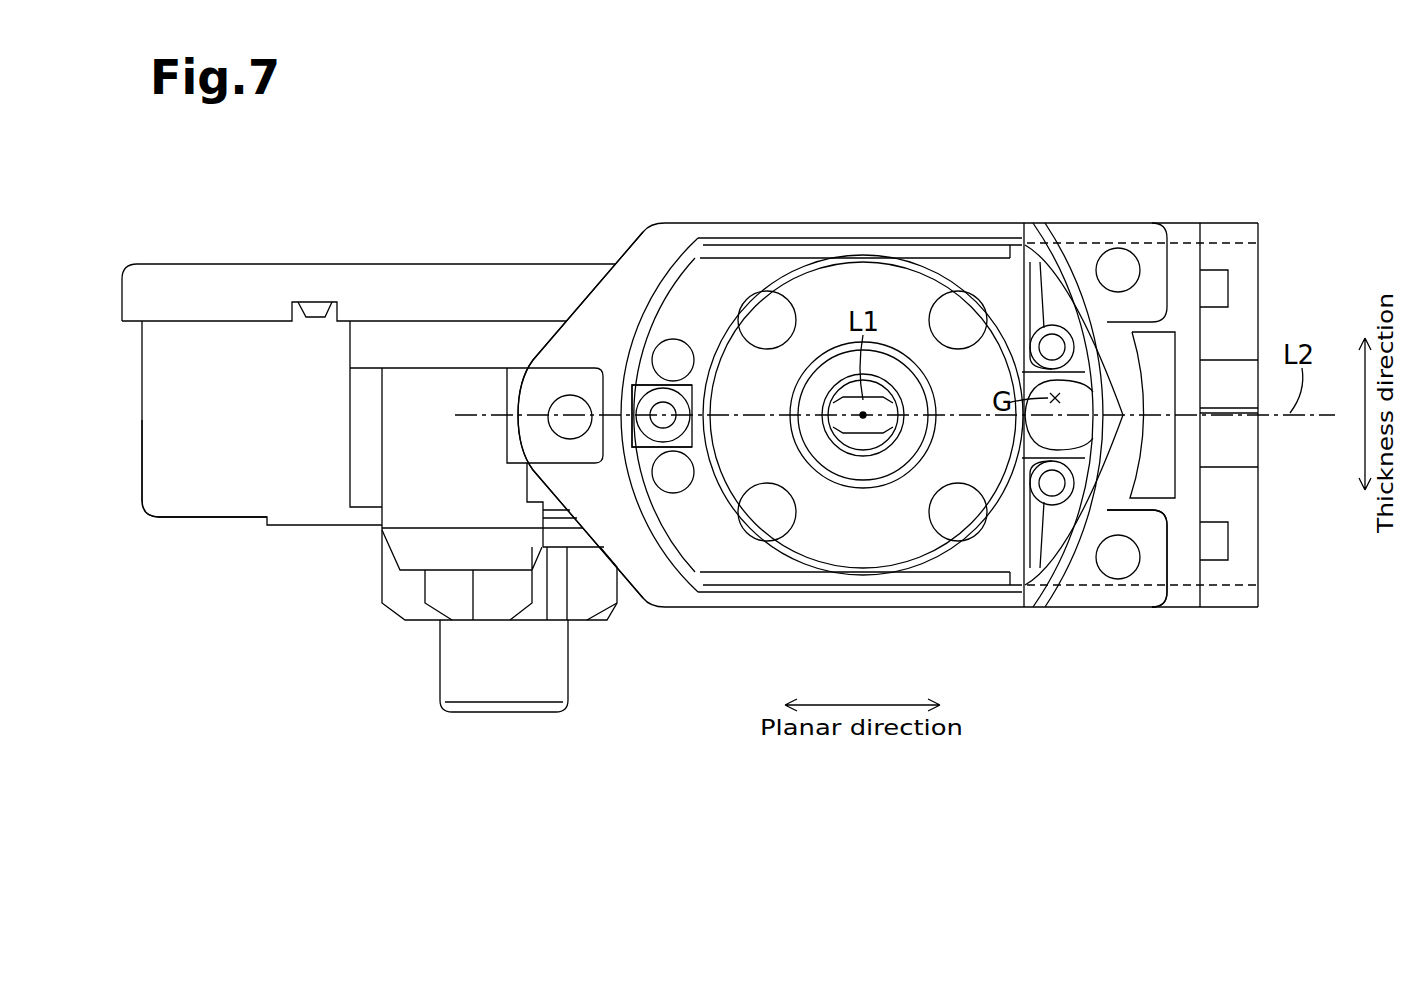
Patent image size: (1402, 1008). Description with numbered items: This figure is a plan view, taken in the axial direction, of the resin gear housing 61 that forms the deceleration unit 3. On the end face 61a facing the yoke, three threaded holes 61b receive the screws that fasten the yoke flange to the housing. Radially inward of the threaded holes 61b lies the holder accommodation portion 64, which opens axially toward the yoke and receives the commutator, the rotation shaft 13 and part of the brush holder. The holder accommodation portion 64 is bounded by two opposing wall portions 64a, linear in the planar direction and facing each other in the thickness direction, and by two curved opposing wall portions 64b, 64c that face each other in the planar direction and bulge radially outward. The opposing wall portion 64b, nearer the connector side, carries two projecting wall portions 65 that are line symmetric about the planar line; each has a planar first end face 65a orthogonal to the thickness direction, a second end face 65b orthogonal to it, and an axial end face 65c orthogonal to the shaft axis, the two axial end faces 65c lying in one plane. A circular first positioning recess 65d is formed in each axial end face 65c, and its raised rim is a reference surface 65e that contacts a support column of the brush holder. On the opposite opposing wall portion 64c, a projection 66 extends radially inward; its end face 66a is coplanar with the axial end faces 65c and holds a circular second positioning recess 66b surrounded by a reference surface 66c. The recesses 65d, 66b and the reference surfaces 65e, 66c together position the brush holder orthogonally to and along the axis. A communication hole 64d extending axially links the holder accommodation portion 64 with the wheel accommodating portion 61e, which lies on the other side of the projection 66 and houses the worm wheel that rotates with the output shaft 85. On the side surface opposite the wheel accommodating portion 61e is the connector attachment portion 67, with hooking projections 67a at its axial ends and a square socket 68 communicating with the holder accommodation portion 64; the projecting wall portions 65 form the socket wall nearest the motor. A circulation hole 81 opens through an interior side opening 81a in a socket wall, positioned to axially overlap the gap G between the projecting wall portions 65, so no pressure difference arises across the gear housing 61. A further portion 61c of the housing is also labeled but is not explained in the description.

The deceleration unit 3 is at (1299, 180).
The rotation shaft 13 is at (863, 432).
The gear housing 61 is at (1258, 233).
The end face 61a is at (1140, 224).
The threaded holes 61b is at (552, 425).
The circular portion 61c is at (878, 252).
The wheel accommodating portion 61e is at (218, 500).
The holder accommodation portion 64 is at (735, 244).
The opposing wall portions 64a is at (802, 232).
The opposing wall portion 64b is at (1105, 348).
The opposing wall portion 64c is at (633, 308).
The communication hole 64d is at (680, 353).
The projecting wall portions 65 is at (1068, 426).
The first end face 65a is at (1030, 388).
The second end face 65b is at (1008, 262).
The axial end face 65c is at (1037, 256).
The first positioning recess 65d is at (1032, 300).
The reference surface 65e is at (1066, 338).
The projection 66 is at (692, 391).
The end face 66a is at (630, 388).
The second positioning recess 66b is at (690, 428).
The reference surface 66c is at (640, 440).
The connector attachment portion 67 is at (1258, 510).
The hooking projection 67a is at (1228, 283).
The socket 68 is at (1178, 592).
The circulation hole 81 is at (1261, 419).
The interior side opening 81a is at (1080, 423).
The output shaft 85 is at (395, 603).